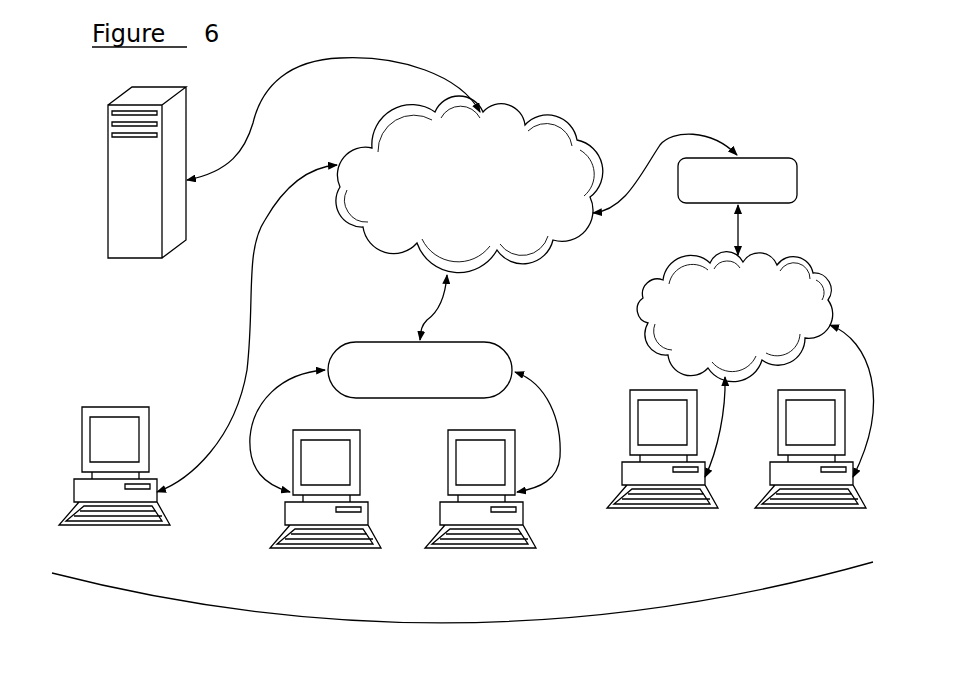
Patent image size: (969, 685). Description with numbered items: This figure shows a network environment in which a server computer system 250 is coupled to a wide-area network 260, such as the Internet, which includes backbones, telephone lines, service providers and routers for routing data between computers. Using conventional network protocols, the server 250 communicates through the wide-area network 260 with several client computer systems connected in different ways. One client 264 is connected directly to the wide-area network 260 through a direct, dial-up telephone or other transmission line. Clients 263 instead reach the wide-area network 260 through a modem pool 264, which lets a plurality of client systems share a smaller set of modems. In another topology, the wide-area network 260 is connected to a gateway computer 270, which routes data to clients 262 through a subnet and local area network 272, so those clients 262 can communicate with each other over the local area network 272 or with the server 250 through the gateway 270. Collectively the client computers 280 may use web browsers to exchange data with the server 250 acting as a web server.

The server computer system 250 is at (108, 112).
The wide-area network 260 is at (519, 112).
The client computer systems 262 is at (650, 390).
The client computer systems 263 is at (283, 510).
The modem pool 264 is at (395, 340).
The gateway computer 270 is at (772, 153).
The local area network 272 is at (788, 257).
The client computers 280 is at (462, 615).